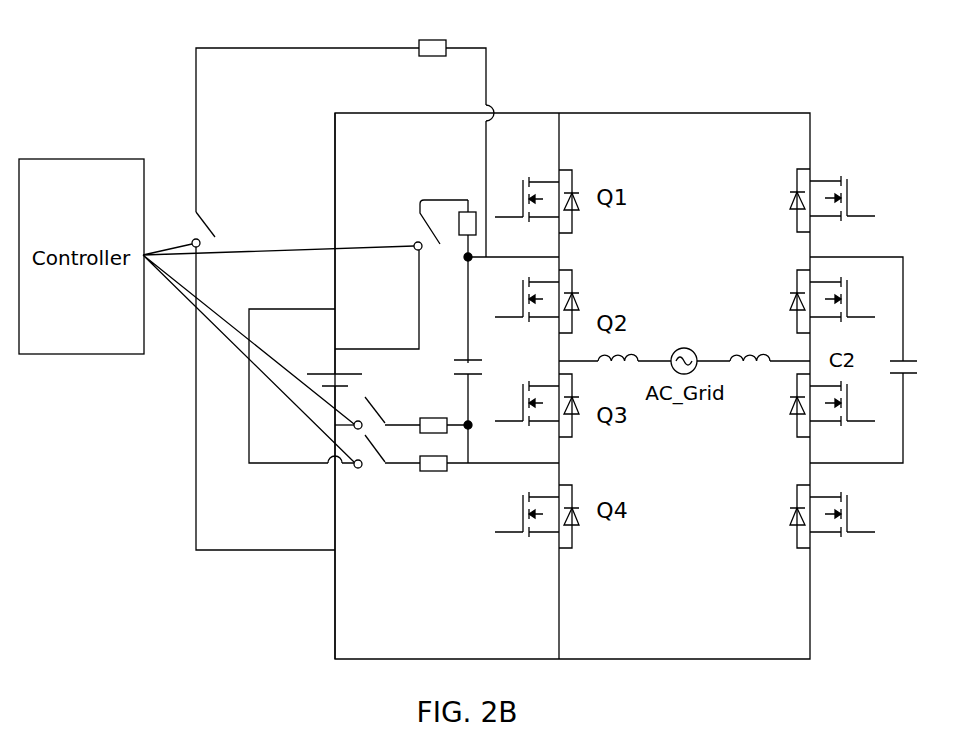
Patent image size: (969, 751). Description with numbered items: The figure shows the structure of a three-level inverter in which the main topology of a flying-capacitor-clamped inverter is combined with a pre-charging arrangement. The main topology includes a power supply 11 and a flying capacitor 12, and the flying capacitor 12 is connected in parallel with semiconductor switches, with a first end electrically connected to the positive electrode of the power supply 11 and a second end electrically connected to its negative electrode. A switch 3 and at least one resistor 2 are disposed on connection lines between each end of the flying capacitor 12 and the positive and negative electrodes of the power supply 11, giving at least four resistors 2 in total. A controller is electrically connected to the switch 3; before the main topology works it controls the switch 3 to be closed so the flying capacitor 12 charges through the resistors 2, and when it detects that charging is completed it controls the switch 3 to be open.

The resistor 2 is at (430, 255).
The switch 3 is at (330, 347).
The power supply 11 is at (333, 386).
The flying capacitor 12 is at (458, 378).